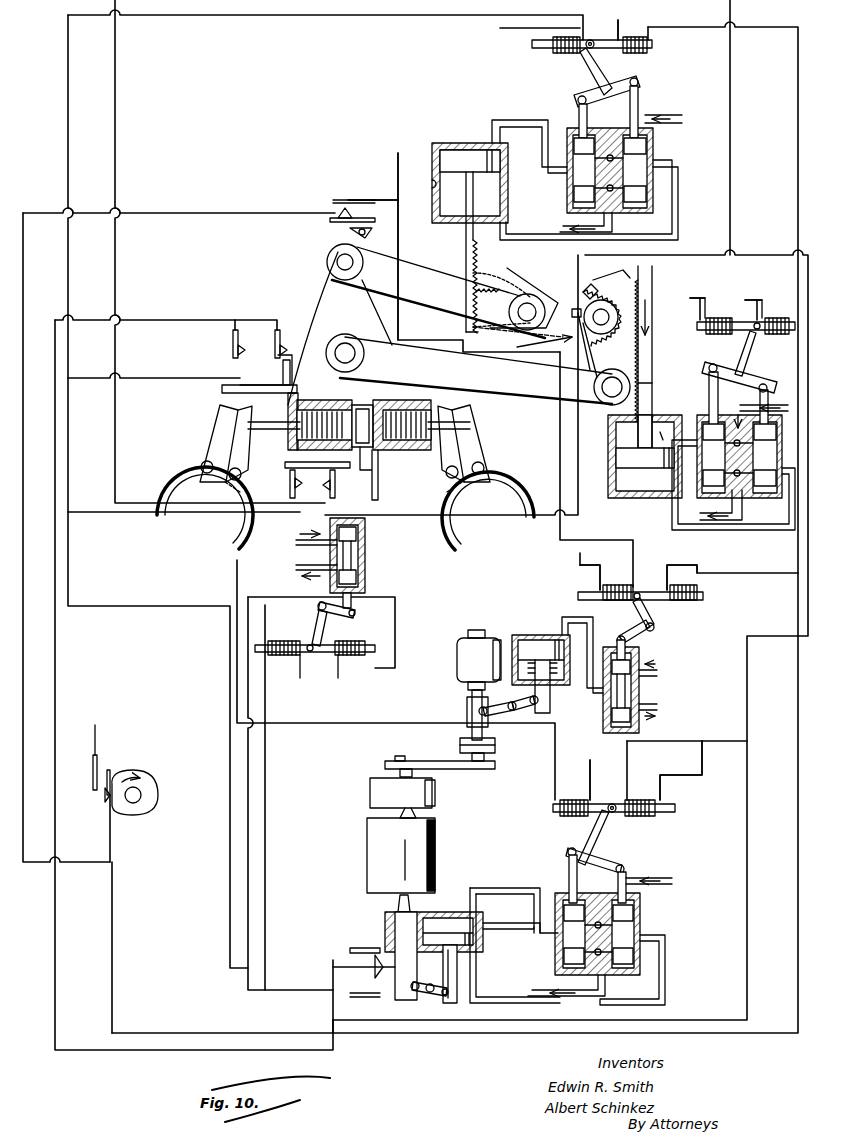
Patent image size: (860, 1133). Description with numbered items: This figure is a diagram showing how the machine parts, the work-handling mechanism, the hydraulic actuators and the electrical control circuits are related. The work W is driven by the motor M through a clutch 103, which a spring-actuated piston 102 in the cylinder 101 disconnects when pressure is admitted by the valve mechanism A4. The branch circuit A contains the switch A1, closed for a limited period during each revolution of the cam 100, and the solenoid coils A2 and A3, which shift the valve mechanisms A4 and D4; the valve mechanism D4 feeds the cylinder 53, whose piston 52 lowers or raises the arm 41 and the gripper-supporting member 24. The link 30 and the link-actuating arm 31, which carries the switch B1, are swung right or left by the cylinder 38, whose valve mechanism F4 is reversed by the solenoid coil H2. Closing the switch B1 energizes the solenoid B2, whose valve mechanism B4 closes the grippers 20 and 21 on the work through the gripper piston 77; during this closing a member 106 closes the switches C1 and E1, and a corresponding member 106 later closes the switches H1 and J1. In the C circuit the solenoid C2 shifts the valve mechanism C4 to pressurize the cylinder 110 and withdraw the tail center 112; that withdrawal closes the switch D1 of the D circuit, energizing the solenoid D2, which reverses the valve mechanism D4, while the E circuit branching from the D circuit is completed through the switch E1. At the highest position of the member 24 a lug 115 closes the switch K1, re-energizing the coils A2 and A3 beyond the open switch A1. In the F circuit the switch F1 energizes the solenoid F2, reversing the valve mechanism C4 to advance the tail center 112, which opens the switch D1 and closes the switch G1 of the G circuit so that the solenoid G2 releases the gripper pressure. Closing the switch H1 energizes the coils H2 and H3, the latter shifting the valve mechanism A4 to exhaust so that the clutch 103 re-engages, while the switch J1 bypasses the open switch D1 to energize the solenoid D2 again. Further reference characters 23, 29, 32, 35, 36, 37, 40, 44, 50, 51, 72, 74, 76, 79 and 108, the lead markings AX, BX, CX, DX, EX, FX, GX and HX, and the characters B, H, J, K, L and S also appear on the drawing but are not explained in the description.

The gripper 20 is at (238, 535).
The gripper 21 is at (520, 520).
The jaw pivot pins 23 is at (203, 468).
The gripper-supporting member 24 is at (318, 300).
The pivot of lever 30 29 is at (345, 340).
The link 30 is at (512, 390).
The link-actuating arm 31 is at (594, 345).
The gear 32 is at (620, 320).
The rack 35 is at (651, 356).
The rack rod 36 is at (654, 385).
The cylinder 37 is at (616, 457).
The cylinder 38 is at (616, 483).
The pivot of lever 41 40 is at (340, 262).
The arm 41 is at (420, 272).
The roller 44 is at (528, 310).
The sector 50 is at (505, 298).
The rack 51 is at (478, 260).
The piston 52 is at (457, 158).
The cylinder 53 is at (440, 187).
The jaw arms 72 is at (232, 440).
The spring 74 is at (300, 427).
The spring 76 is at (395, 440).
The gripper piston 77 is at (353, 410).
The stop 79 is at (378, 455).
The cam 100 is at (152, 785).
The cylinder 101 is at (518, 635).
The piston 102 is at (540, 648).
The clutch 103 is at (488, 748).
The member 106 is at (230, 395).
The guide 108 is at (522, 341).
The cylinder 110 is at (448, 918).
The tail center 112 is at (396, 903).
The lug 115 is at (345, 236).
The branch circuit A is at (776, 30).
The switch A1 is at (100, 795).
The solenoid coil A2 is at (683, 582).
The solenoid coil A3 is at (645, 52).
The valve mechanism A4 is at (640, 688).
The lead AX is at (659, 299).
The line B is at (578, 495).
The switch B1 is at (577, 298).
The solenoid B2 is at (351, 662).
The valve mechanism B4 is at (332, 548).
The lead BX is at (338, 680).
The C circuit C is at (237, 578).
The switch C1 is at (338, 500).
The solenoid C2 is at (614, 794).
The valve mechanism C4 is at (640, 915).
The lead CX is at (601, 780).
The D circuit D is at (70, 278).
The switch D1 is at (366, 1007).
The solenoid D2 is at (564, 35).
The valve mechanism D4 is at (652, 150).
The lead DX is at (512, 28).
The E circuit E is at (118, 137).
The switch E1 is at (314, 482).
The lead EX is at (692, 298).
The F circuit F is at (708, 741).
The switch F1 is at (612, 298).
The solenoid F2 is at (678, 552).
The valve F4 is at (740, 502).
The lead FX is at (681, 770).
The G circuit G is at (267, 802).
The switch G1 is at (374, 950).
The solenoid G2 is at (315, 662).
The lead GX is at (300, 680).
The line H is at (350, 394).
The switch H1 is at (275, 350).
The solenoid coil H2 is at (746, 314).
The solenoid coil H3 is at (620, 592).
The lead HX is at (660, 434).
The line J is at (168, 376).
The switch J1 is at (232, 346).
The line K is at (388, 202).
The switch K1 is at (330, 206).
The line L is at (398, 165).
The driving motor M is at (497, 685).
The scale S is at (402, 798).
The work W is at (401, 855).